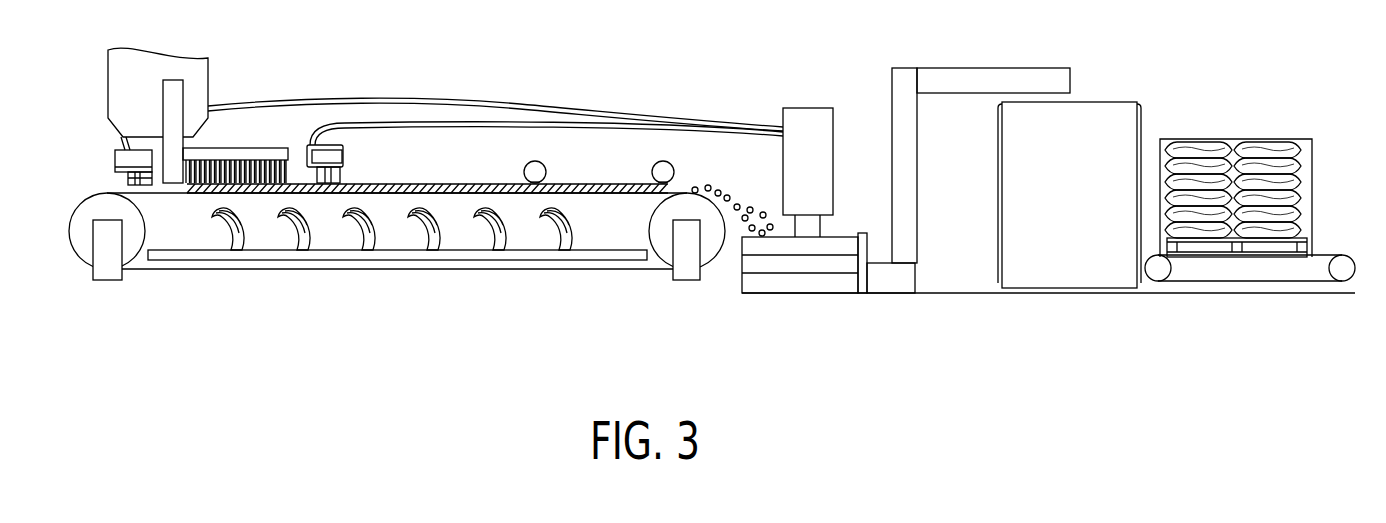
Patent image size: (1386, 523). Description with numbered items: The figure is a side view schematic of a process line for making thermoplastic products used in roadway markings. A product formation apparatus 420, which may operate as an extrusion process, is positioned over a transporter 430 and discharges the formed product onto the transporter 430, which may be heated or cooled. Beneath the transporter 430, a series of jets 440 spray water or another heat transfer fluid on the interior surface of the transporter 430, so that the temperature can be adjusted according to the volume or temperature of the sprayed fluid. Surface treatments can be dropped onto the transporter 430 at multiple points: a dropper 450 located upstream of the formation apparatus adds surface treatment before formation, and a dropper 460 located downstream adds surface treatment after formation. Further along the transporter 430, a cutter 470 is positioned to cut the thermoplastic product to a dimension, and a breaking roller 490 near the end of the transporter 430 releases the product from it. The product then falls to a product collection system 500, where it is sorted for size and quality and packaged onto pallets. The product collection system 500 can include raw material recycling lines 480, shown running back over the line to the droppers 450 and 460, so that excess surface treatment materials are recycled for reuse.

The product formation apparatus 420 is at (233, 148).
The transporter 430 is at (457, 184).
The jets 440 is at (365, 240).
The dropper 450 is at (137, 163).
The dropper 460 is at (325, 153).
The cutter 470 is at (538, 162).
The raw material recycling lines 480 is at (447, 122).
The breaking roller 490 is at (666, 161).
The product collection system 500 is at (843, 275).